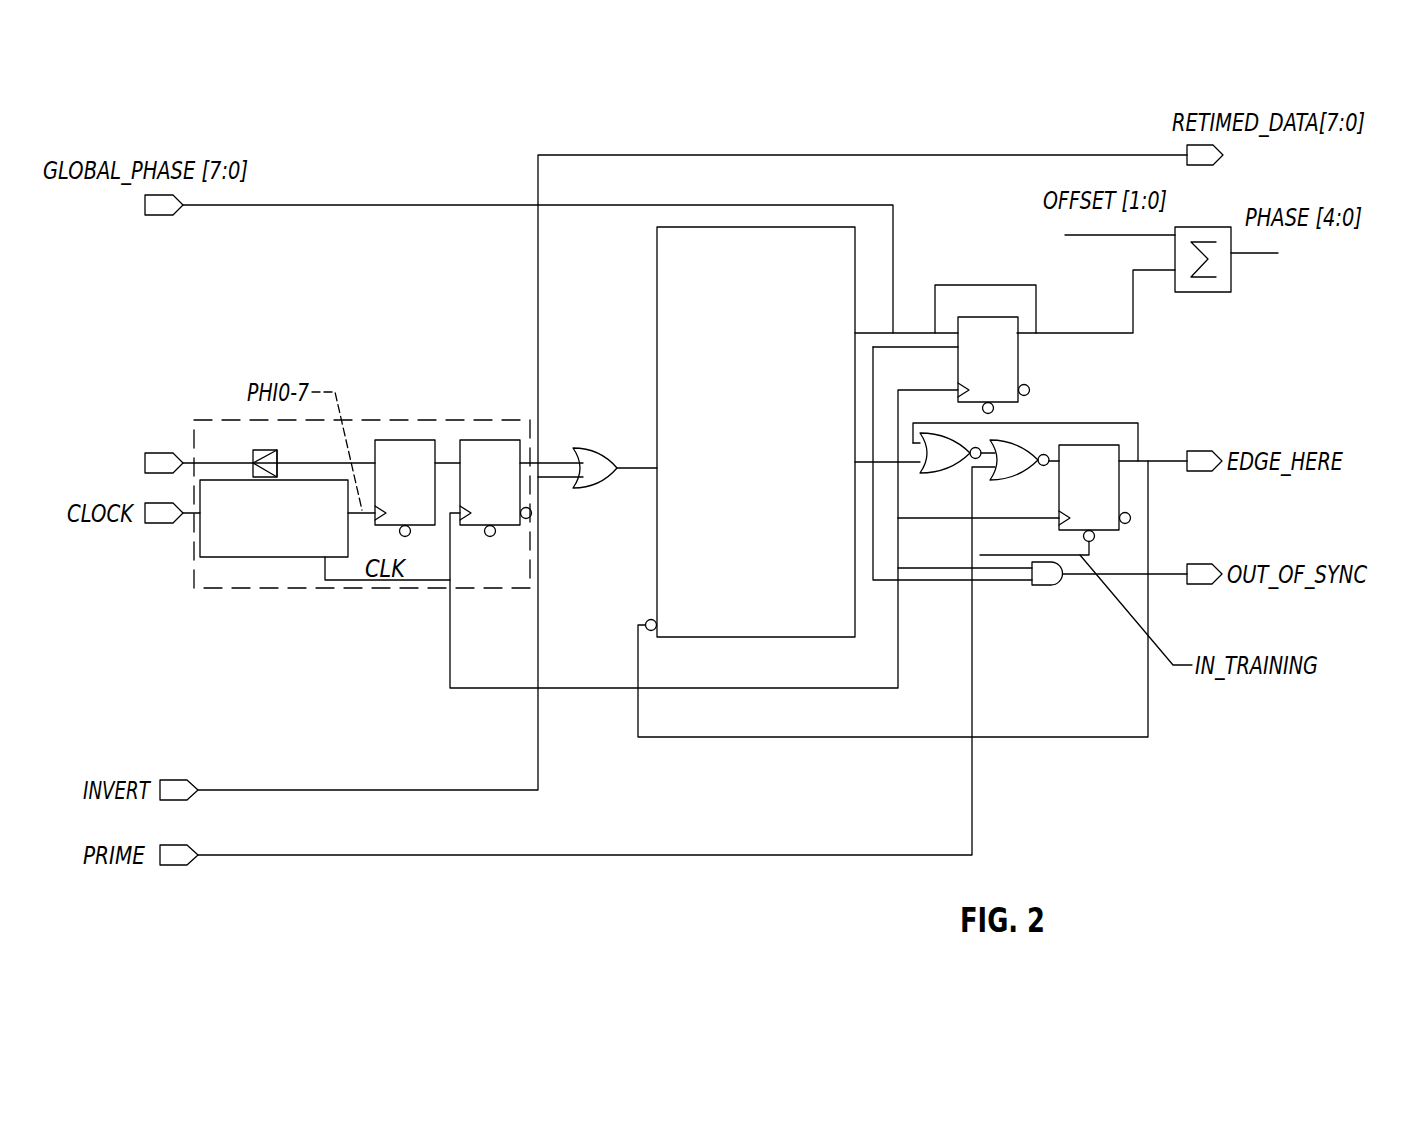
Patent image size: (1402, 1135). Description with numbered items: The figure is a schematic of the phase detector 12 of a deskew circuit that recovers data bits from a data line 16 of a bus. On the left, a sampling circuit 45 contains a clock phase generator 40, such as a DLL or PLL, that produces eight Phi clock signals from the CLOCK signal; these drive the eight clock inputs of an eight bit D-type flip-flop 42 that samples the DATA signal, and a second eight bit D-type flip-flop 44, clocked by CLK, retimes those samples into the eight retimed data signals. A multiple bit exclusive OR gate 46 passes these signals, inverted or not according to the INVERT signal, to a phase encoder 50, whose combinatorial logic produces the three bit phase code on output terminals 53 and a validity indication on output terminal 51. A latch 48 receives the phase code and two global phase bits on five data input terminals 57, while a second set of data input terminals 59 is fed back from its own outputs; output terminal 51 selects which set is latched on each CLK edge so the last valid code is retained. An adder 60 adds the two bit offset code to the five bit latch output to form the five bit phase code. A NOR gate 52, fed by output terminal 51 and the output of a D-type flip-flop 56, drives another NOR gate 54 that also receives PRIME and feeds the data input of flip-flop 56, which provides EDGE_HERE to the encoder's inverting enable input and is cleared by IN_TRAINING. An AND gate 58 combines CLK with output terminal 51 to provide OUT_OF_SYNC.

The phase detector 12 is at (993, 122).
The data line 16 is at (183, 462).
The clock phase generator 40 is at (226, 480).
The D-type flip-flop 42 is at (417, 440).
The D-type flip-flop 44 is at (487, 440).
The sampling circuit 45 is at (333, 590).
The exclusive OR gate 46 is at (597, 487).
The latch 48 is at (1022, 374).
The phase encoder 50 is at (657, 335).
The output terminal 51 is at (857, 383).
The NOR gate 52 is at (962, 440).
The output terminals 53 is at (855, 330).
The NOR gate 54 is at (1045, 440).
The D-type flip-flop 56 is at (1105, 445).
The data input terminals 57 is at (902, 333).
The AND gate 58 is at (1042, 585).
The data input terminals 59 is at (947, 318).
The adder 60 is at (1210, 292).